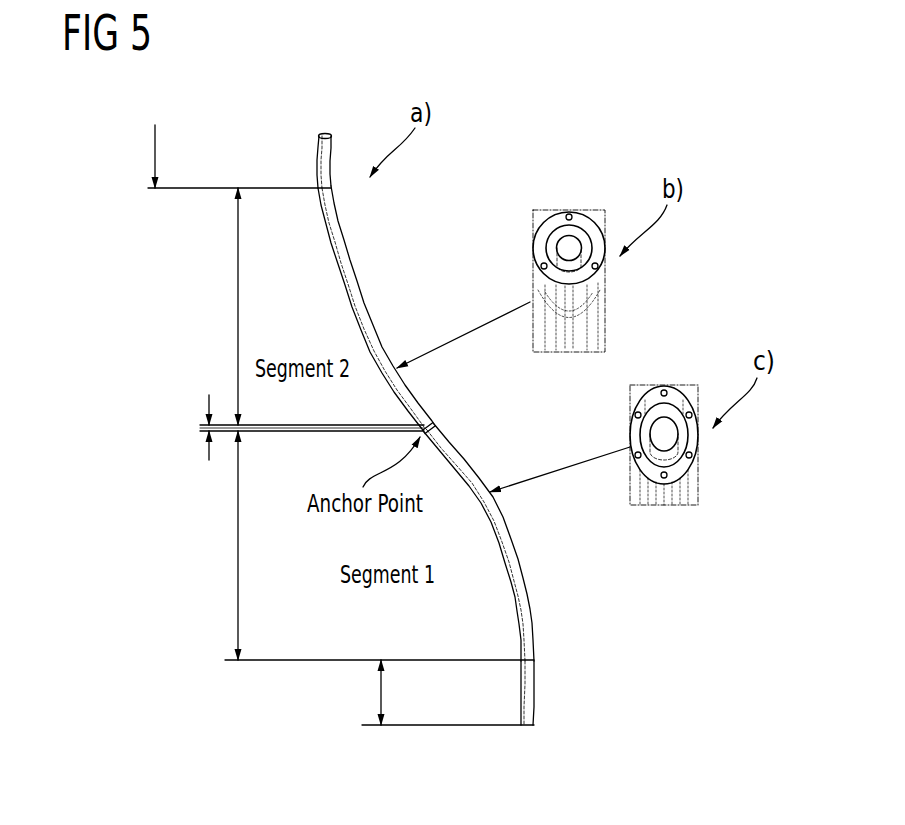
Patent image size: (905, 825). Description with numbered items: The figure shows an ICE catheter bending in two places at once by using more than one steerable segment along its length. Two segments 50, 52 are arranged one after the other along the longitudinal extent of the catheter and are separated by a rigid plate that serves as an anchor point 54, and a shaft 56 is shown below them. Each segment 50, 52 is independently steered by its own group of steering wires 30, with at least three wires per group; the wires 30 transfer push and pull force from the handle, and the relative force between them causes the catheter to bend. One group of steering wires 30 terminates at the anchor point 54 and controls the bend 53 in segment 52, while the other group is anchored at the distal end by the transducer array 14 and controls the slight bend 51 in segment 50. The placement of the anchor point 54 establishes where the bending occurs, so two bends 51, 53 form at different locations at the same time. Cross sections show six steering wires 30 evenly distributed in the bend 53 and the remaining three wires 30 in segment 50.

The transducer array 14 is at (155, 148).
The steering wires 30 is at (569, 214).
The segment 50 is at (238, 306).
The bend 51 is at (380, 308).
The segment 52 is at (238, 547).
The bend 53 is at (535, 603).
The anchor point 54 is at (200, 428).
The shaft length 56 is at (381, 693).